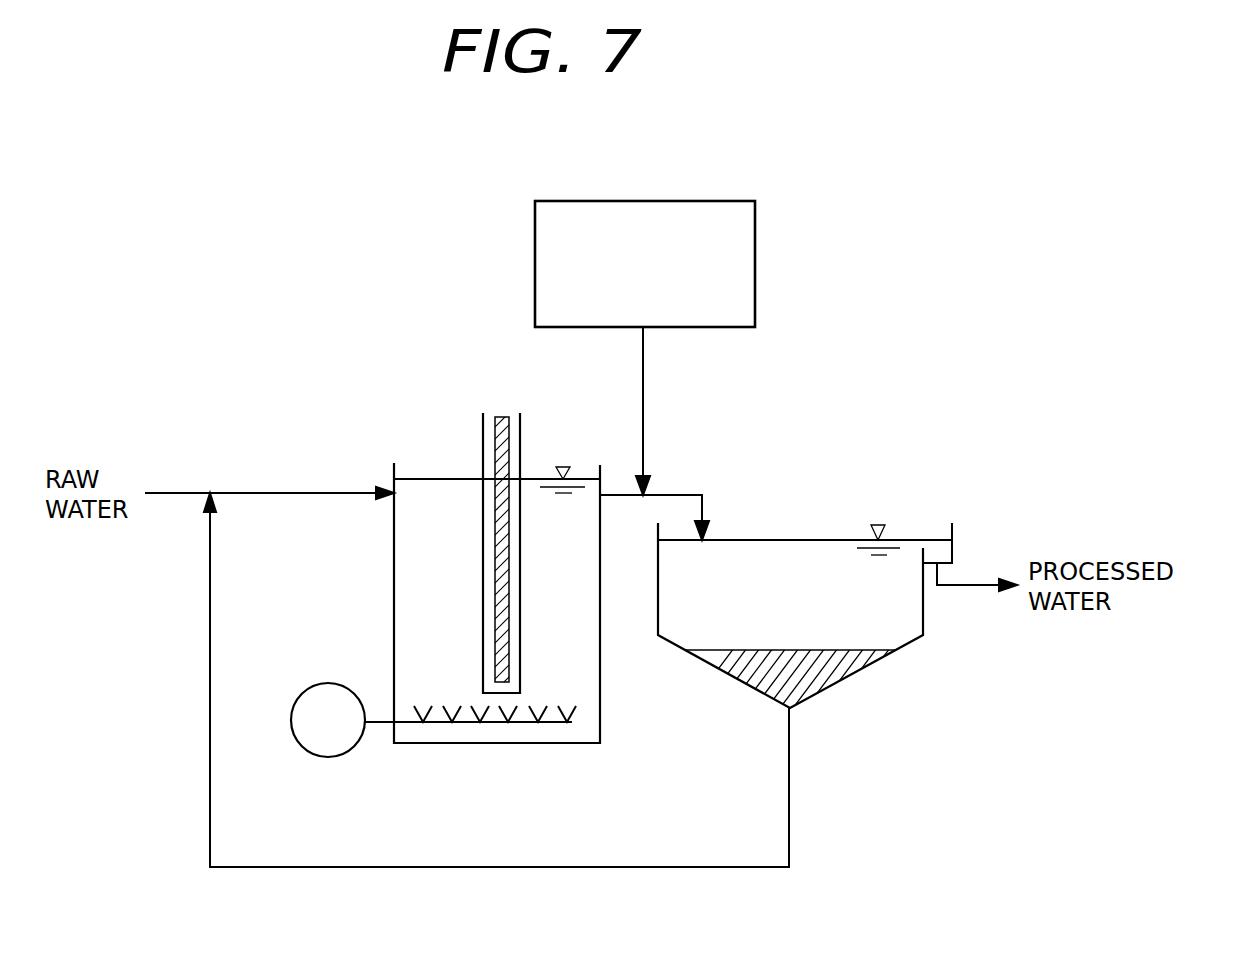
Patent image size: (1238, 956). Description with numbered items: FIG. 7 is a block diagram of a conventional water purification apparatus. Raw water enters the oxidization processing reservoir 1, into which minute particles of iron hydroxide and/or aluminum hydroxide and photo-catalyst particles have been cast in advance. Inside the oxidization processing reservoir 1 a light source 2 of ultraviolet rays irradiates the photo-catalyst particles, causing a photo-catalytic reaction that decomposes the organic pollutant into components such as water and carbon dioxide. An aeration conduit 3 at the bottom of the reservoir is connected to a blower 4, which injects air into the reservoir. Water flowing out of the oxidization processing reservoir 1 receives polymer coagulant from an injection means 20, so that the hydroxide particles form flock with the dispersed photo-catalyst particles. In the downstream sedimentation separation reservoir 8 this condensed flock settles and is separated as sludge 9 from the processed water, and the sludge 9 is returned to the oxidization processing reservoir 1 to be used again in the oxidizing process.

The oxidization processing reservoir 1 is at (552, 743).
The light source 2 is at (521, 438).
The aeration conduit 3 is at (468, 722).
The blower 4 is at (325, 757).
The sedimentation separation reservoir 8 is at (912, 642).
The sludge 9 is at (740, 673).
The injection means 20 is at (755, 260).